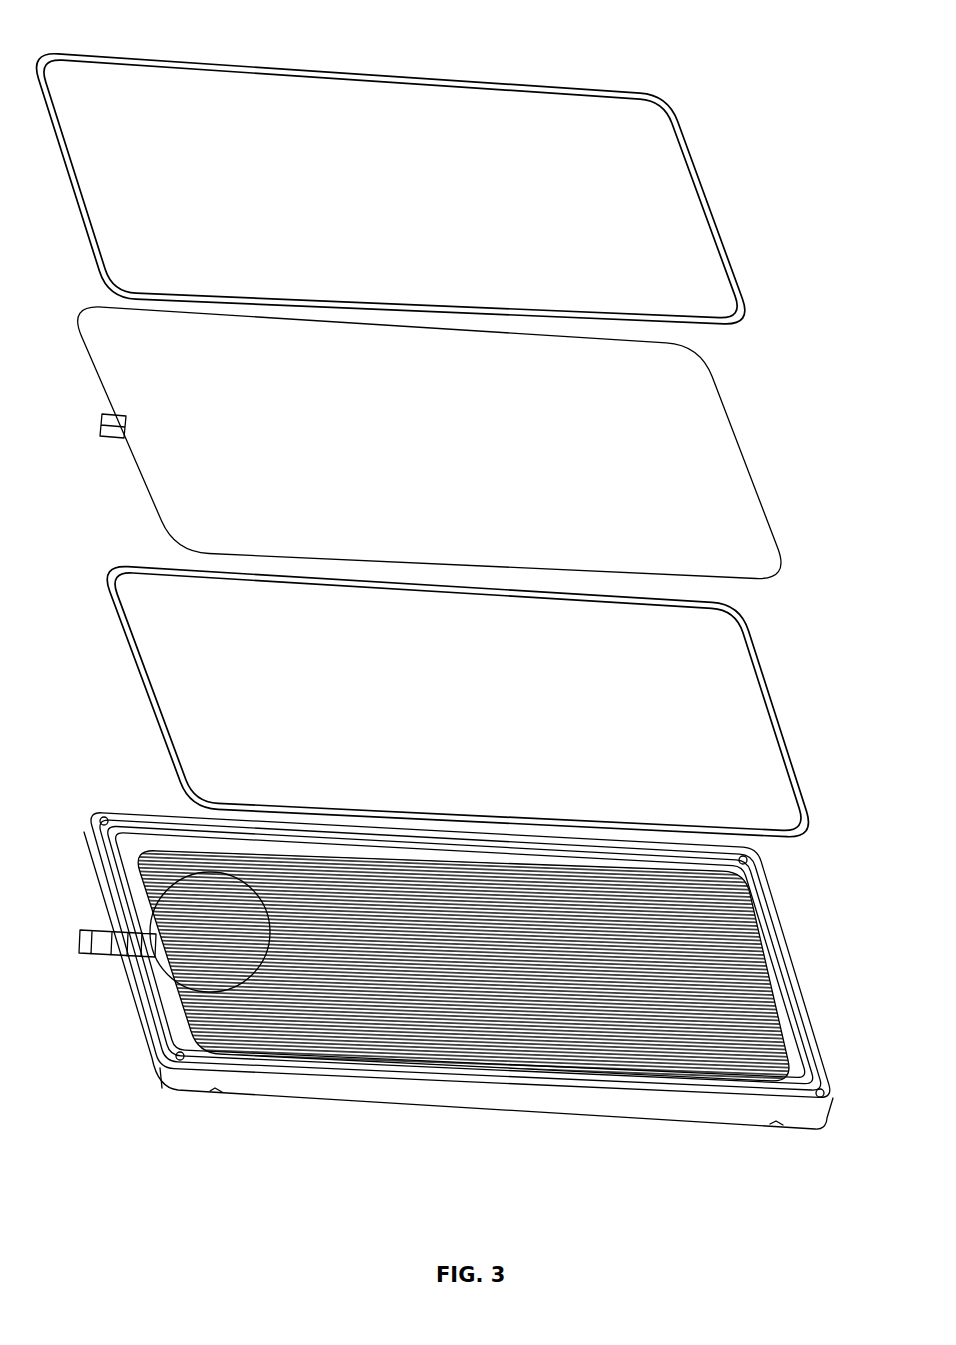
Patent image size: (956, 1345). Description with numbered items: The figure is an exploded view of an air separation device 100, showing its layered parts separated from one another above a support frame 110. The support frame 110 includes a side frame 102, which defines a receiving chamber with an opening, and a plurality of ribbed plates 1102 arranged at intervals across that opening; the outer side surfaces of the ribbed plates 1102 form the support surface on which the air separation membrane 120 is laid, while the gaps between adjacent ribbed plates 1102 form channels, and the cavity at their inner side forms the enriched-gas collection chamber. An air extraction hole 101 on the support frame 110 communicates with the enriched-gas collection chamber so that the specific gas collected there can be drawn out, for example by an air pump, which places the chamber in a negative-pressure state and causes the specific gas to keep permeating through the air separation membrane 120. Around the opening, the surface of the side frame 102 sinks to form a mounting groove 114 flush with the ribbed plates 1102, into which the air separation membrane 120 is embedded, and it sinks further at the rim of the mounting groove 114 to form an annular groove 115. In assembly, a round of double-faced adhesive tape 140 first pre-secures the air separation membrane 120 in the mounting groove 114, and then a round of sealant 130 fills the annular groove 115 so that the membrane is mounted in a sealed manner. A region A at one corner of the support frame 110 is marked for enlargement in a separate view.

The air separation device 100 is at (76, 28).
The sealant 130 is at (100, 272).
The air separation membrane 120 is at (140, 460).
The double-faced adhesive tape 140 is at (156, 756).
The support frame 110 is at (443, 993).
The ribbed plates 1102 is at (598, 1066).
The mounting groove 114 is at (760, 942).
The annular groove 115 is at (746, 880).
The region A is at (225, 1001).
The side frame 102 is at (444, 1093).
The air extraction hole 101 is at (88, 940).